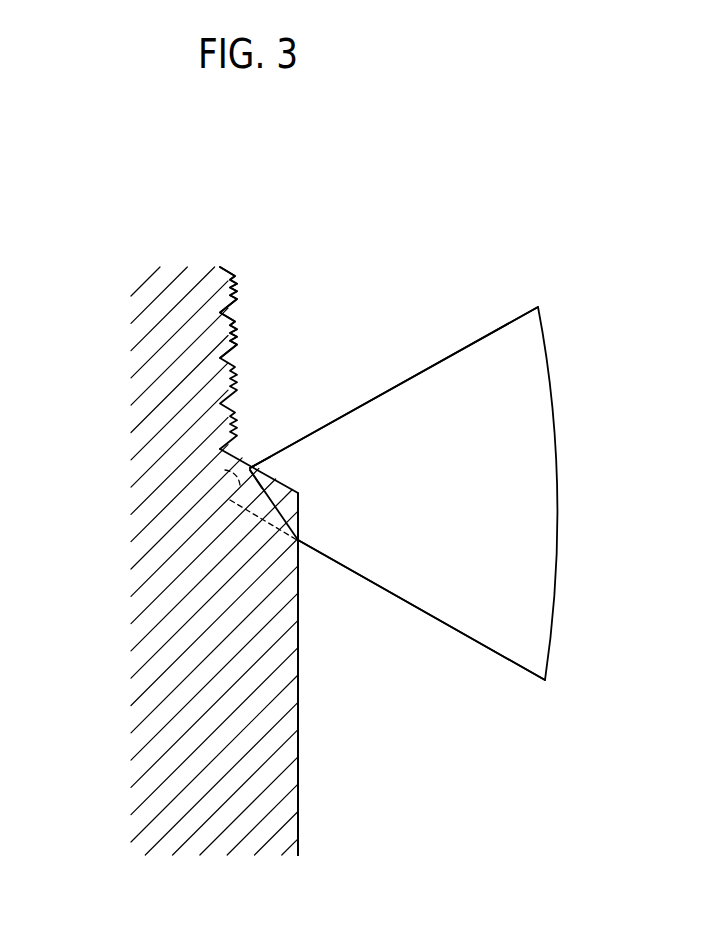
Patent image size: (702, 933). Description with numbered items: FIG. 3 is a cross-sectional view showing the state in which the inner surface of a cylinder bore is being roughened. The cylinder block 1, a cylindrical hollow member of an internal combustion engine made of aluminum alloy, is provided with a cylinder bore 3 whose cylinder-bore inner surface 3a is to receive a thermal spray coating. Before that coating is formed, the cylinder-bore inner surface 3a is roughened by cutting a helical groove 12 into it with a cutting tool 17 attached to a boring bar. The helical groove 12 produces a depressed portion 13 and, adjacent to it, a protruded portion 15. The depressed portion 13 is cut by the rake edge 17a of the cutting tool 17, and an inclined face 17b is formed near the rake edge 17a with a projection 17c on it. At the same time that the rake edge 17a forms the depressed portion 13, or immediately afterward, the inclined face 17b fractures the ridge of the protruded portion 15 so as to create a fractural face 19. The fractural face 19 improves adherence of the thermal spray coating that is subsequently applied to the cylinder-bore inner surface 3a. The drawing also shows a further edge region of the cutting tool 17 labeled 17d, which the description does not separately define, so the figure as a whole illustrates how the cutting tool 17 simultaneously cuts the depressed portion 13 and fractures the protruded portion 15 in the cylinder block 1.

The cylinder block 1 is at (160, 597).
The cylinder bore 3 is at (386, 705).
The cylinder-bore inner surface 3a is at (297, 811).
The helical groove 12 is at (256, 479).
The depressed portion 13 is at (237, 405).
The protruded portion 15 is at (233, 383).
The cutting tool 17 is at (522, 312).
The rake edge 17a is at (230, 505).
The inclined face 17b is at (487, 334).
The projection 17c is at (240, 490).
The lower boundary of light beam 17d is at (472, 622).
The fractural face 19 is at (238, 352).